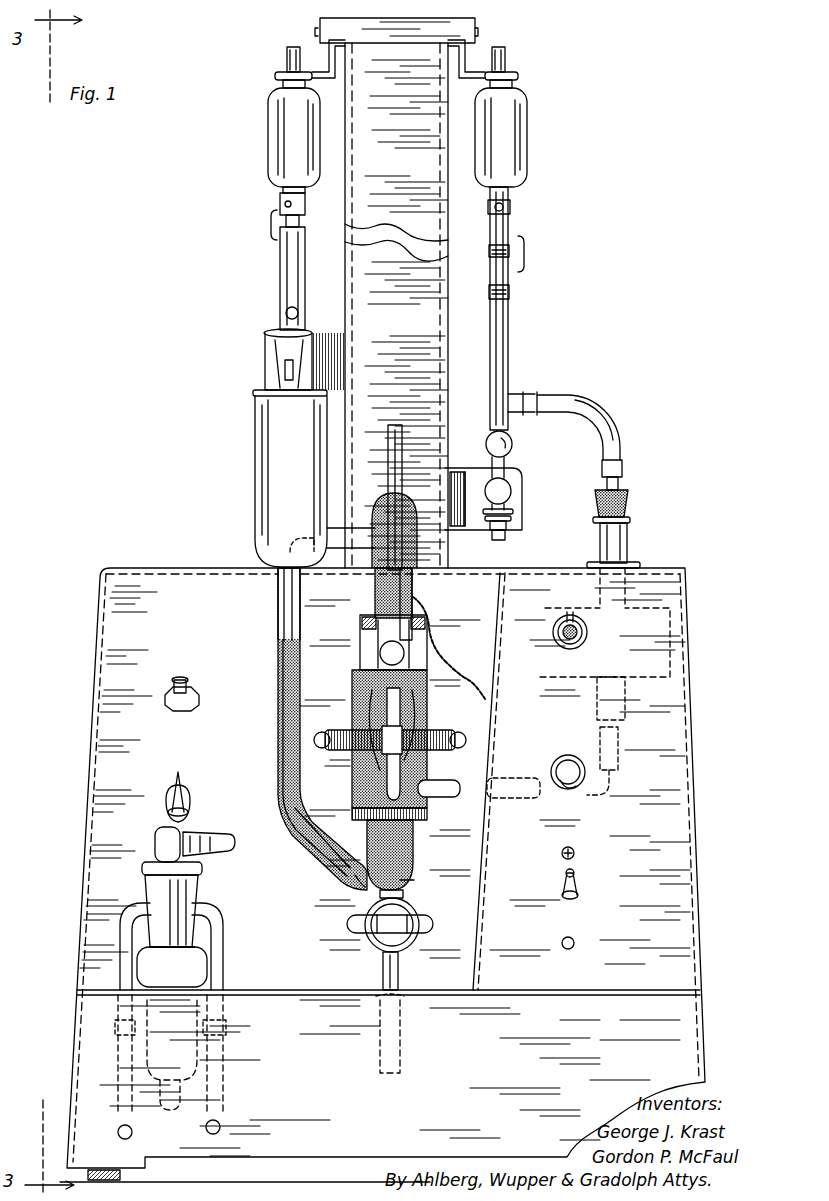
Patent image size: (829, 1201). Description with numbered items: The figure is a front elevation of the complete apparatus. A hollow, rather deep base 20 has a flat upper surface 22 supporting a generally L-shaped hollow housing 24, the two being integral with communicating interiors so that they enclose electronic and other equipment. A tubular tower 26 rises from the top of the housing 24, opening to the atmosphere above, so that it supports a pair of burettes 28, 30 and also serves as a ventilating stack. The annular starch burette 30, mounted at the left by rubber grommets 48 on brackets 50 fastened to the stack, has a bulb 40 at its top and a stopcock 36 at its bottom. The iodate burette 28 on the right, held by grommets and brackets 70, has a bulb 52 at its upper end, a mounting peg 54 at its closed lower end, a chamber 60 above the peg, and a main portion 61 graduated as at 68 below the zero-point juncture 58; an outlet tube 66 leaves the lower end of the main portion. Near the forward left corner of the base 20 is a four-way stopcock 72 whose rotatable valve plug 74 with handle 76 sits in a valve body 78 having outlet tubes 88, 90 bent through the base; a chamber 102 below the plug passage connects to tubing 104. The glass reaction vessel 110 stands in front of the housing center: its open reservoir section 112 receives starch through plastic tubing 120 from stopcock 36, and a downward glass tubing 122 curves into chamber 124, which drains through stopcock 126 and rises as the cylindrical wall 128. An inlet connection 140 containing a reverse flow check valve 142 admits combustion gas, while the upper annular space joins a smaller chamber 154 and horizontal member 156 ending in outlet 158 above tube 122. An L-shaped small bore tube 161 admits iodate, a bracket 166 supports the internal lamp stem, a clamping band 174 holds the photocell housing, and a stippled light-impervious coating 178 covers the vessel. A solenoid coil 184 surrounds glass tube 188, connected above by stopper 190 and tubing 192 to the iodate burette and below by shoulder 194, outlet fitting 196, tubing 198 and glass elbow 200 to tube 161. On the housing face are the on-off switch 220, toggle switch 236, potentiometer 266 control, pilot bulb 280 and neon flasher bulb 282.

The hollow base 20 is at (682, 1012).
The flat upper surface 22 is at (650, 988).
The hollow housing 24 is at (134, 578).
The tower 26 is at (444, 254).
The burette 28 is at (520, 306).
The burette 30 is at (272, 266).
The stopcock 36 is at (274, 352).
The bulb 40 is at (268, 143).
The rubber grommets 48 is at (287, 71).
The brackets 50 is at (330, 52).
The bulb 52 is at (527, 136).
The peg 54 is at (500, 542).
The juncture 58 is at (510, 218).
The chamber 60 is at (513, 448).
The main portion 61 is at (492, 264).
The outlet tube 66 is at (520, 396).
The graduations 68 is at (490, 294).
The grommets and brackets 70 is at (522, 64).
The four-way stopcock 72 is at (134, 891).
The valve plug 74 is at (157, 840).
The handle 76 is at (233, 846).
The valve body 78 is at (195, 870).
The outlet tube 88 is at (225, 940).
The outlet tube 90 is at (120, 940).
The chamber 102 is at (185, 1060).
The tubing 104 is at (134, 1134).
The reaction vessel 110 is at (366, 600).
The reservoir section 112 is at (255, 492).
The plastic tubing 120 is at (261, 392).
The glass tubing 122 is at (278, 670).
The chamber 124 is at (410, 888).
The stopcock 126 is at (380, 948).
The wall 128 is at (364, 768).
The inlet connection 140 is at (397, 430).
The reverse flow check valve 142 is at (374, 700).
The smaller chamber 154 is at (412, 582).
The horizontal passage forming member 156 is at (368, 520).
The outlet 158 is at (288, 556).
The L-shaped small bore tube 161 is at (442, 800).
The bracket 166 is at (380, 652).
The clamping band 174 is at (444, 735).
The light-impervious coating 178 is at (353, 808).
The solenoid coil 184 is at (627, 662).
The glass tube 188 is at (628, 546).
The stopper 190 is at (630, 506).
The tubing 192 is at (612, 426).
The shoulder 194 is at (623, 710).
The outlet fitting 196 is at (513, 800).
The tubing 198 is at (618, 746).
The glass elbow 200 is at (612, 790).
The on-off switch 220 is at (171, 690).
The toggle switch 236 is at (572, 885).
The potentiometer 266 is at (172, 798).
The pilot bulb 280 is at (572, 614).
The neon flasher bulb 282 is at (566, 756).